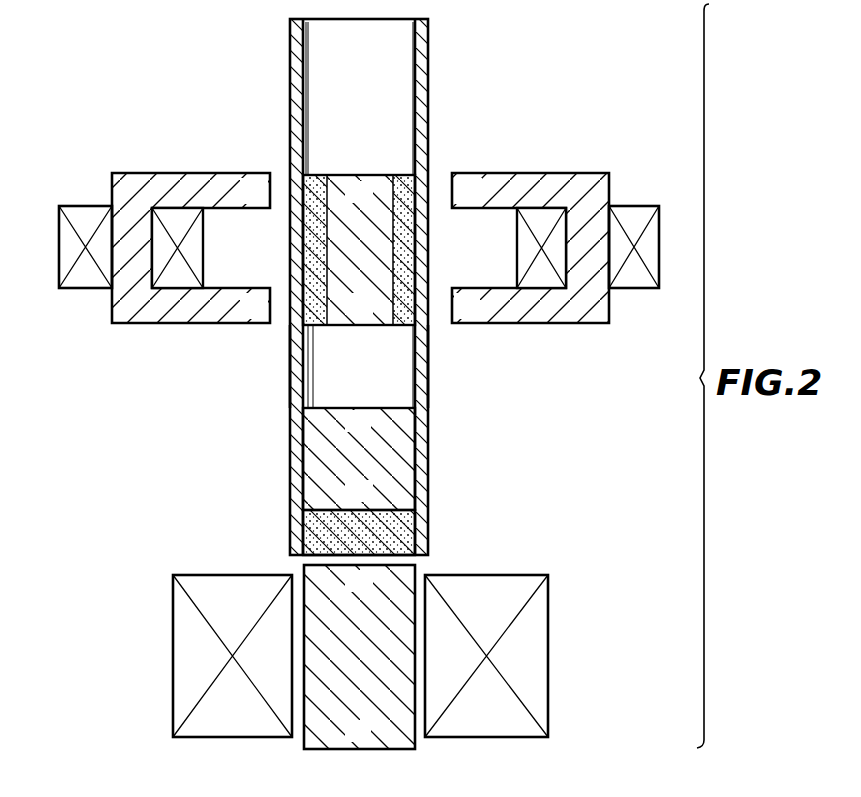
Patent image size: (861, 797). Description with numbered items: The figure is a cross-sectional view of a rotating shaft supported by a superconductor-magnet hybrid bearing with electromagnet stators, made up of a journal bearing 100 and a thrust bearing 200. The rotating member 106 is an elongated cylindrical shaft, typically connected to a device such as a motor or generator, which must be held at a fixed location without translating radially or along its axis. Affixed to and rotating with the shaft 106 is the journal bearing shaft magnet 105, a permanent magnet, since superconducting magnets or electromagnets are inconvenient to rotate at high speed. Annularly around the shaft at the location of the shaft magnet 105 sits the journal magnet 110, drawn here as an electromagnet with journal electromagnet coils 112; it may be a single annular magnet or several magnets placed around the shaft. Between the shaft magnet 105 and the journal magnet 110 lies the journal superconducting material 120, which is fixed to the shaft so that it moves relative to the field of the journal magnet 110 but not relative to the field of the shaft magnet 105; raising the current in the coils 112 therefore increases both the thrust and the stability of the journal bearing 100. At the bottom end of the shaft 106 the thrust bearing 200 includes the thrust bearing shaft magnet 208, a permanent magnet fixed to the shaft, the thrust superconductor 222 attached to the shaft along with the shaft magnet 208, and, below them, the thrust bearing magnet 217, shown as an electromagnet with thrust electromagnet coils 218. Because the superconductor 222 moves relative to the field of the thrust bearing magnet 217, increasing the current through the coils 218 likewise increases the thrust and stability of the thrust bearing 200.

The journal bearing 100 is at (235, 103).
The journal bearing shaft magnet 105 is at (383, 178).
The rotating member 106 is at (402, 63).
The journal magnet 110 is at (162, 180).
The journal electromagnet coils 112 is at (72, 212).
The journal superconducting material 120 is at (300, 337).
The thrust bearing 200 is at (537, 522).
The thrust bearing shaft magnet 208 is at (403, 452).
The thrust bearing magnet 217 is at (318, 740).
The thrust electromagnet coils 218 is at (173, 628).
The thrust superconductor 222 is at (303, 535).